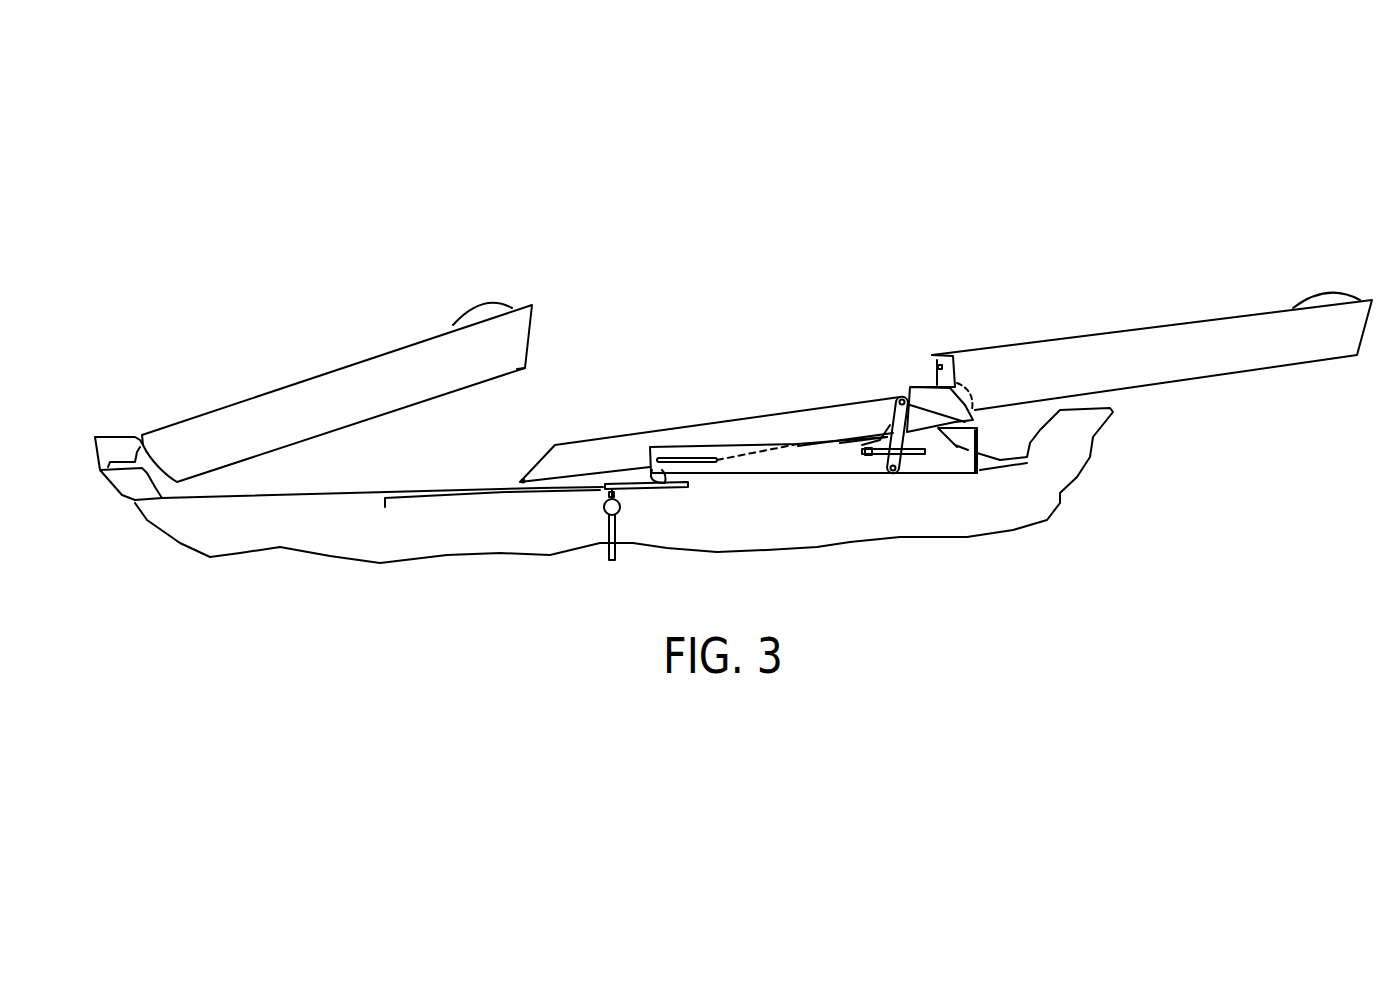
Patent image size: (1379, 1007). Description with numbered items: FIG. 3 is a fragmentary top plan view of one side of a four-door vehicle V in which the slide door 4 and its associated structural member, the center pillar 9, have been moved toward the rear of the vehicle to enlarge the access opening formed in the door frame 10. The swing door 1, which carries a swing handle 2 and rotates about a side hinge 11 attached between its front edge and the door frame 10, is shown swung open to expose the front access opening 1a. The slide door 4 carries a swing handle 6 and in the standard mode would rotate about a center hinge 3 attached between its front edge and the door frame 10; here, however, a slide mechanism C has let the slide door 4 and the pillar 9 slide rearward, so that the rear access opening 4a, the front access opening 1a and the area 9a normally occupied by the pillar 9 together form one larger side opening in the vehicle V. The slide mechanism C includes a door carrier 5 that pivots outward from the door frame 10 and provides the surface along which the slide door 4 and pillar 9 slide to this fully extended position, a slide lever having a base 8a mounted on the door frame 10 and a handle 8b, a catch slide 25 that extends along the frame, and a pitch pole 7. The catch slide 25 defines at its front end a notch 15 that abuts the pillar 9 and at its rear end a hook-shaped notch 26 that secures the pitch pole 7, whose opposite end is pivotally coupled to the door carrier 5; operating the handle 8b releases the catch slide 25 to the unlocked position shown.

The swing door 1 is at (277, 387).
The swing handle 2 is at (453, 320).
The center hinge 3 is at (943, 353).
The slide door 4 is at (1157, 325).
The rear access opening 4a is at (764, 381).
The door carrier 5 is at (802, 407).
The swing handle 6 is at (1300, 305).
The pitch pole 7 is at (913, 443).
The base 8a is at (603, 513).
The handle 8b is at (607, 553).
The center pillar 9 is at (927, 410).
The area normally occupied by the pillar 9a is at (557, 428).
The door frame 10 is at (247, 500).
The side hinge 11 is at (142, 440).
The notch 15 is at (652, 480).
The catch slide 25 is at (898, 425).
The hook-shaped notch 26 is at (1027, 458).
The front access opening 1a is at (398, 474).
The slide mechanism C is at (752, 497).
The vehicle V is at (123, 515).